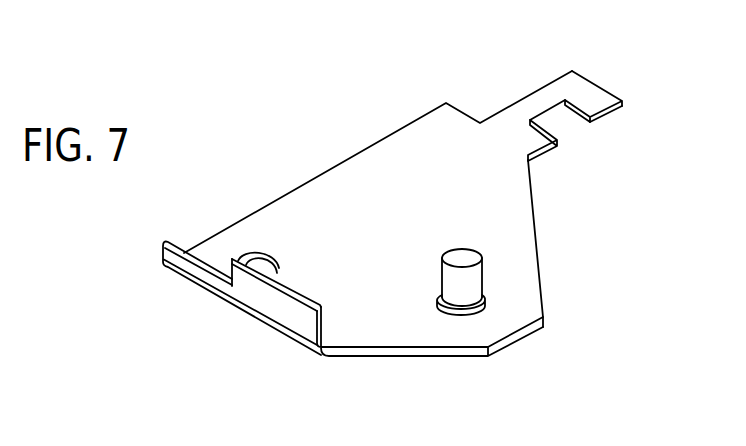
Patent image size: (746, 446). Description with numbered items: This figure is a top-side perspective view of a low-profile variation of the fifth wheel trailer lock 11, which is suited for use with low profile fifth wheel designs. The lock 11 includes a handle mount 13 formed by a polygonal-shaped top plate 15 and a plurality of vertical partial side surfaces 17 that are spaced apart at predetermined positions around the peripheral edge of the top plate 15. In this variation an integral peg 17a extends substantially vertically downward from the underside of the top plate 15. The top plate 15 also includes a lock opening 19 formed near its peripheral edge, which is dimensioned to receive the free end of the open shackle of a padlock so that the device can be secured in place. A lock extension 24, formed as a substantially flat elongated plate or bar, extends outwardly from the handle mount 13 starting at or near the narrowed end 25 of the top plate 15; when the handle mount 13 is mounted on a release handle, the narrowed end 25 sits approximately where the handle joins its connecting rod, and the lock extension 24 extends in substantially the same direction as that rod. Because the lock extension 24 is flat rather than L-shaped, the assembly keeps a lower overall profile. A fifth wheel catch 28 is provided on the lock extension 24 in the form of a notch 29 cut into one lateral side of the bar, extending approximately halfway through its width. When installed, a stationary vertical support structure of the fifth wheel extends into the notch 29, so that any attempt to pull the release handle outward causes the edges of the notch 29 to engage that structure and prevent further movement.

The fifth wheel trailer lock 11 is at (433, 220).
The handle mount 13 is at (544, 292).
The top plate 15 is at (383, 332).
The vertical partial side surfaces 17 is at (248, 297).
The integral peg 17a is at (465, 281).
The lock opening 19 is at (259, 252).
The lock extension 24 is at (506, 104).
The narrowed end 25 is at (533, 158).
The fifth wheel catch 28 is at (597, 132).
The notch 29 is at (561, 108).